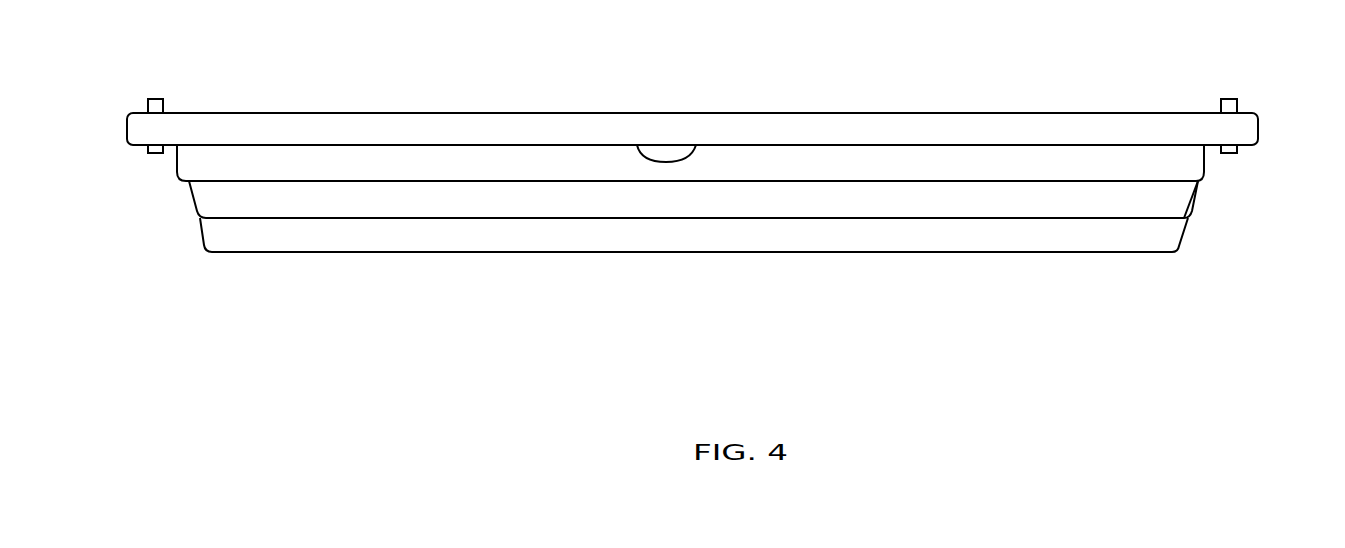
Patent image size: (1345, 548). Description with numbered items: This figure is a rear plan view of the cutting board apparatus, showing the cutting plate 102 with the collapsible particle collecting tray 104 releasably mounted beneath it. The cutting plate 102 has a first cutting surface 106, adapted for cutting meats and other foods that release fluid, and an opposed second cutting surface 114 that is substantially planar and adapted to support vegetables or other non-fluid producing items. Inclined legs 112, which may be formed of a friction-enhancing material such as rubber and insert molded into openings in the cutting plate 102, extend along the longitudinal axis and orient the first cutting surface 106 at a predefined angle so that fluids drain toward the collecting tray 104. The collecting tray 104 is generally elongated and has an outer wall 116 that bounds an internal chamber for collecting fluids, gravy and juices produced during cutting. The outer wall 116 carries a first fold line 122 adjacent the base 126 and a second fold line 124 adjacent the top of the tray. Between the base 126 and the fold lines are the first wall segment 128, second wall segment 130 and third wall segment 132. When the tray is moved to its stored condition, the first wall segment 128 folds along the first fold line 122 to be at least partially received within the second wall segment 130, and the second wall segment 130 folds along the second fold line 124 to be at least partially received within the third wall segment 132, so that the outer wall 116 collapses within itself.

The cutting plate 102 is at (820, 140).
The particle collecting tray 104 is at (615, 208).
The first cutting surface 106 is at (680, 160).
The inclined legs 112 is at (157, 98).
The second cutting surface 114 is at (510, 113).
The outer wall 116 is at (1212, 228).
The first fold line 122 is at (297, 216).
The second fold line 124 is at (297, 178).
The base 126 is at (888, 253).
The first wall segment 128 is at (1087, 245).
The second wall segment 130 is at (1087, 212).
The third wall segment 132 is at (1087, 174).